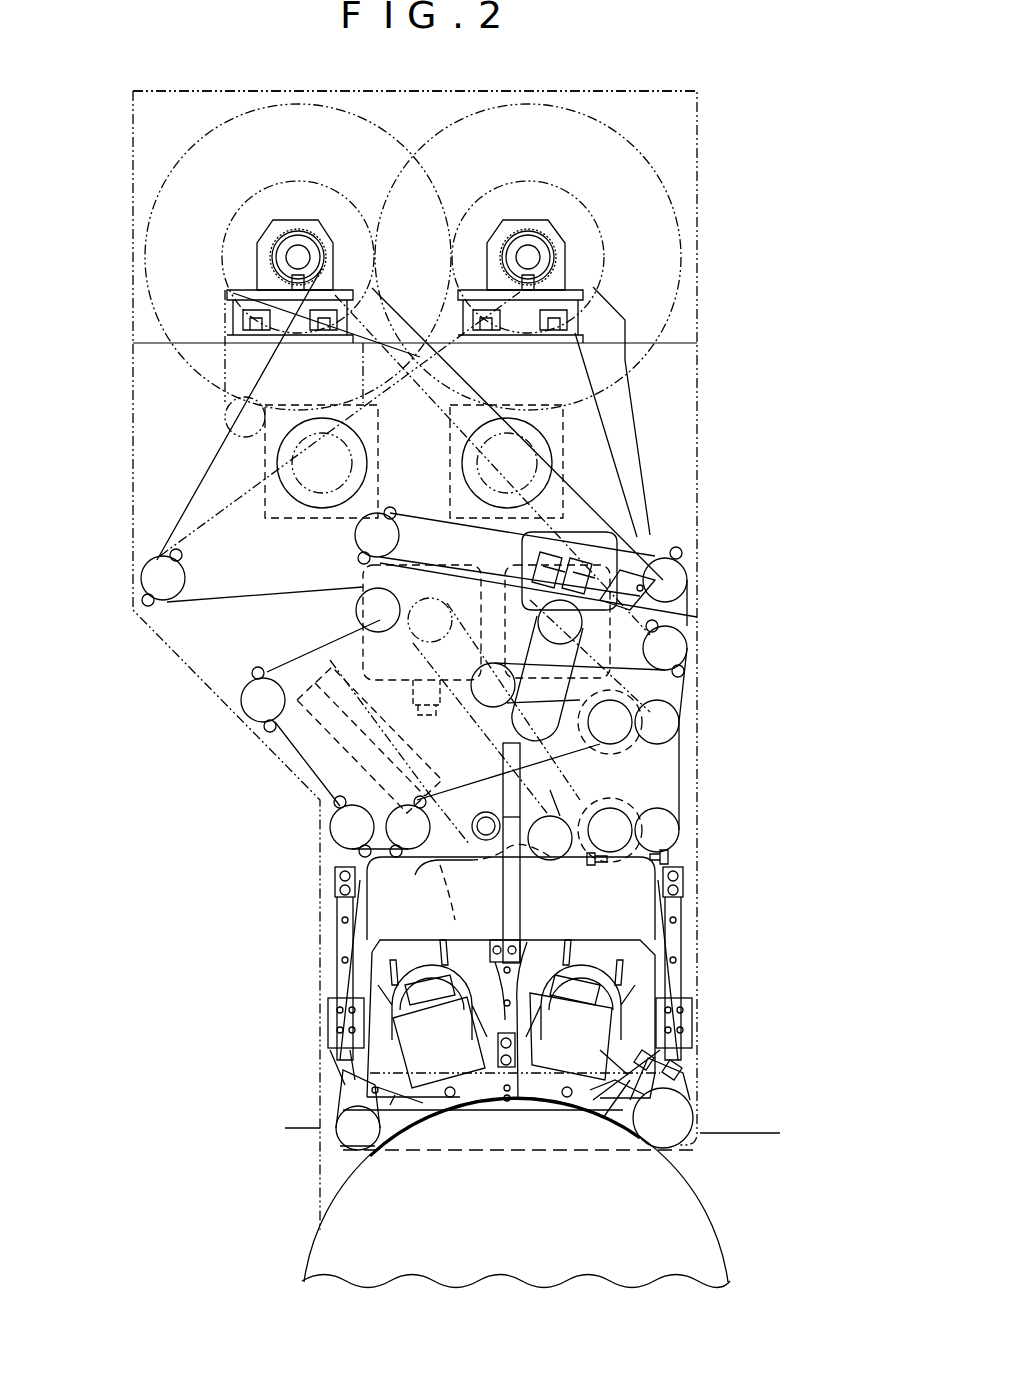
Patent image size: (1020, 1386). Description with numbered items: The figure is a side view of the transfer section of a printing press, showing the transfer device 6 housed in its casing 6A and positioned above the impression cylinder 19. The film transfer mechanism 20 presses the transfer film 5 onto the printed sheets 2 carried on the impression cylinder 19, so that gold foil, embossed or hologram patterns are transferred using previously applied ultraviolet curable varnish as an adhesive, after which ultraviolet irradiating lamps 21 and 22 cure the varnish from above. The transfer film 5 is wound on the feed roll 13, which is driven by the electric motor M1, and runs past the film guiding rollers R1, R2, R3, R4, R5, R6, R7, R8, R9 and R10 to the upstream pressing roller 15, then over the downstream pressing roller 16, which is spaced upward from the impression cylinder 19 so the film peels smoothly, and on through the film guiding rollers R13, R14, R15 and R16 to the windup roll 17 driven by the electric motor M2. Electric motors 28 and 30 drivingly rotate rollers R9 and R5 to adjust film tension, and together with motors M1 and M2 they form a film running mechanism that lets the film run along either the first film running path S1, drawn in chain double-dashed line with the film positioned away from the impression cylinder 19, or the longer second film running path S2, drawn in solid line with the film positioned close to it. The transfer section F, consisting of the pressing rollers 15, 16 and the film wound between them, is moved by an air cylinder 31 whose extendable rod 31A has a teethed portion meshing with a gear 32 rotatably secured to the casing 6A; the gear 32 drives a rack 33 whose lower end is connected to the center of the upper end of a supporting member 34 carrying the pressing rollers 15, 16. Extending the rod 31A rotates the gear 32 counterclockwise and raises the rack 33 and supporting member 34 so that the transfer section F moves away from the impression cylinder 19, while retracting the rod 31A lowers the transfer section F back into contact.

The printed sheets 2 is at (720, 1247).
The transfer film 5 is at (670, 893).
The transfer device 6 is at (735, 282).
The casing of the transfer device 6A is at (700, 490).
The feed roll 13 is at (547, 240).
The upstream pressing roller 15 is at (668, 1125).
The downstream pressing roller 16 is at (350, 1128).
The windup roll 17 is at (277, 240).
The impression cylinder 19 is at (353, 1227).
The film transfer mechanism 20 is at (724, 1068).
The ultraviolet irradiating lamp 21 is at (585, 1017).
The ultraviolet irradiating lamp 22 is at (435, 1020).
The electric motor 28 is at (365, 582).
The electric motor 30 is at (625, 600).
The air cylinder 31 is at (325, 738).
The extendable rod 31A is at (496, 888).
The gear 32 is at (503, 815).
The rack 33 is at (535, 668).
The supporting member 34 is at (595, 945).
The electric motor for the feed roll M1 is at (452, 458).
The electric motor for the windup roll M2 is at (358, 432).
The first film running path S1 is at (328, 1025).
The second film running path S2 is at (345, 1070).
The transfer section F is at (537, 1105).
The film guiding roller R1 is at (665, 574).
The film guiding roller R2 is at (377, 535).
The film guiding roller R3 is at (665, 648).
The film guiding roller R4 is at (493, 685).
The film guiding roller R5 is at (610, 722).
The film guiding roller R6 is at (657, 722).
The film guiding roller R7 is at (408, 826).
The film guiding roller R8 is at (550, 838).
The film guiding roller R9 is at (610, 830).
The film guiding roller R10 is at (657, 830).
The film guiding roller R13 is at (352, 826).
The film guiding roller R14 is at (263, 699).
The film guiding roller R15 is at (378, 610).
The film guiding roller R16 is at (163, 577).